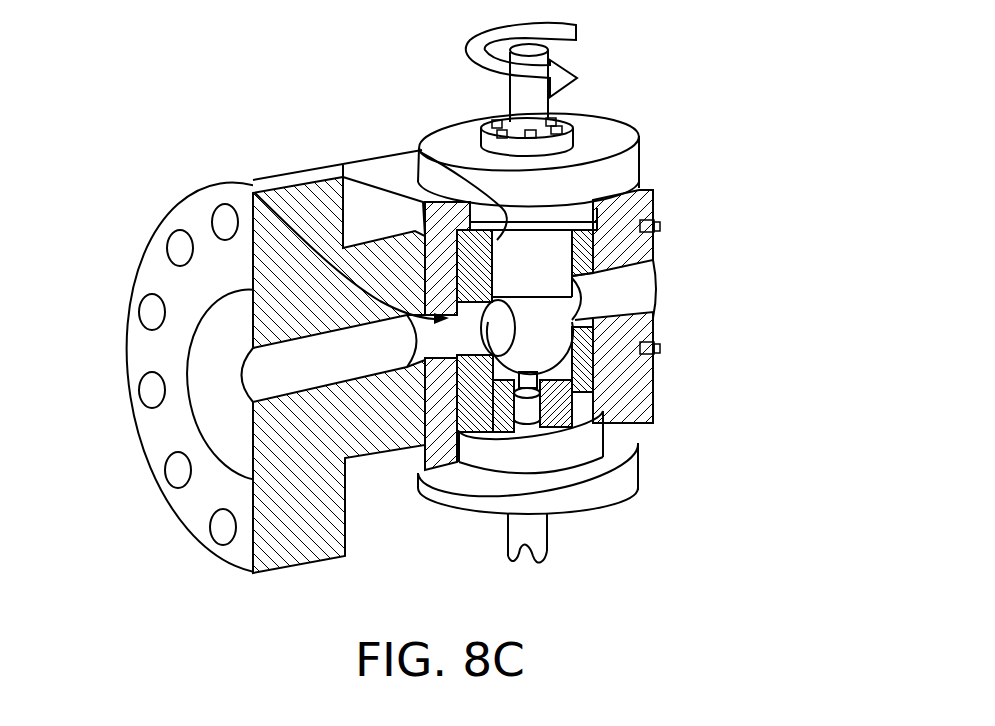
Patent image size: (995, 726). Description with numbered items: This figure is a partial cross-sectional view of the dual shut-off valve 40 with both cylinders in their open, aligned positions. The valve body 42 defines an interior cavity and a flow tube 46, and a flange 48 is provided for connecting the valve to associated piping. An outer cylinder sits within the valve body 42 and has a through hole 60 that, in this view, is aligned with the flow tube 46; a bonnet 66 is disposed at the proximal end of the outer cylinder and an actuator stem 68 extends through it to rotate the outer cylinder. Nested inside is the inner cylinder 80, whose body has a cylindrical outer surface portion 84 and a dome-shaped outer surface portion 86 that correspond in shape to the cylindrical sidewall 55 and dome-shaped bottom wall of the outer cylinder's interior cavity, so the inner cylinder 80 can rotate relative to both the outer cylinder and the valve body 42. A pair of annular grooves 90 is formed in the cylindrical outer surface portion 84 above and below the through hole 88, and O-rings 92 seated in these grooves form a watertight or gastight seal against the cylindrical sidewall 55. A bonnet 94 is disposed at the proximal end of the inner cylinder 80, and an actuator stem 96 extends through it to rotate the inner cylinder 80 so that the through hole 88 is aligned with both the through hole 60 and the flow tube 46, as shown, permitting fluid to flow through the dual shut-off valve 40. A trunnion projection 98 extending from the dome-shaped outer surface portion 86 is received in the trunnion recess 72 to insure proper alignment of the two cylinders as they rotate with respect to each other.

The dual shut-off valve 40 is at (309, 84).
The valve body 42 is at (370, 173).
The flow tube 46 is at (232, 378).
The flange 48 is at (146, 254).
The cylindrical sidewall 55 is at (374, 173).
The through hole 60 is at (253, 181).
The bonnet 66 is at (634, 463).
The actuator stem 68 is at (550, 533).
The trunnion recess 72 is at (567, 368).
The inner cylinder 80 is at (563, 338).
The cylindrical outer surface portion 84 is at (547, 247).
The dome-shaped outer surface portion 86 is at (507, 367).
The through hole 88 is at (517, 262).
The annular grooves 90 is at (562, 307).
The O-rings 92 is at (538, 298).
The bonnet 94 is at (590, 131).
The actuator stem 96 is at (510, 97).
The trunnion projection 98 is at (524, 370).